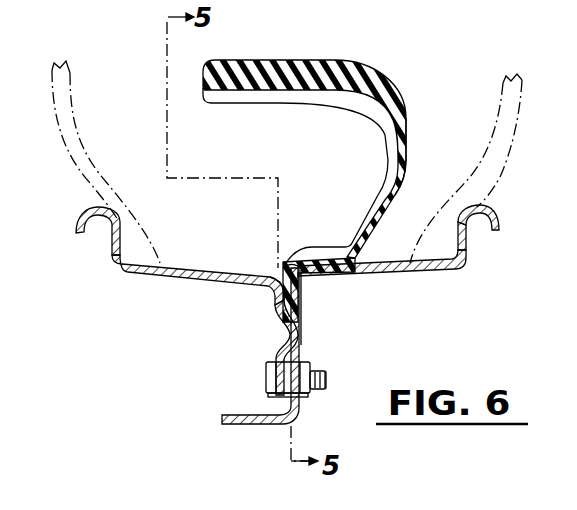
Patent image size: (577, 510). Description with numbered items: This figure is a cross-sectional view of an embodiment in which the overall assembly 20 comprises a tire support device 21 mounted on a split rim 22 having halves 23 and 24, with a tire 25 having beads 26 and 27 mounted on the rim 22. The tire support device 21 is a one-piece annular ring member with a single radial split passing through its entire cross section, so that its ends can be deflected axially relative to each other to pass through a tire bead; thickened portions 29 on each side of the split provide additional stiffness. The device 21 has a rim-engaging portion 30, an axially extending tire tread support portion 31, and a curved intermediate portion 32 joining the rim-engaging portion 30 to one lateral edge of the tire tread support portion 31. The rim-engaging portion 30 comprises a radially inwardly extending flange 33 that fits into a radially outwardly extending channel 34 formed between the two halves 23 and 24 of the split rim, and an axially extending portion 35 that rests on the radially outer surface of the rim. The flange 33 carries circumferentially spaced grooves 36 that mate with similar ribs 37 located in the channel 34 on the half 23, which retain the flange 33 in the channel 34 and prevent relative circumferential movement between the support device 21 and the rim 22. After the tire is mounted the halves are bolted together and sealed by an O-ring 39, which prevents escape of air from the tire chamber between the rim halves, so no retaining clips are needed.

The overall assembly 20 is at (297, 314).
The tire support device 21 is at (330, 176).
The split rim 22 is at (400, 268).
The rim half 23 is at (188, 280).
The rim half 24 is at (440, 268).
The tire 25 is at (497, 177).
The bead 26 is at (137, 243).
The bead 27 is at (437, 240).
The thickened portion 29 is at (278, 100).
The rim-engaging portion 30 is at (303, 262).
The tire tread support portion 31 is at (231, 60).
The curved intermediate portion 32 is at (410, 140).
The flange 33 is at (300, 300).
The channel 34 is at (298, 327).
The axially extending portion 35 is at (300, 275).
The grooves 36 is at (278, 296).
The ribs 37 is at (279, 304).
The O-ring 39 is at (290, 350).